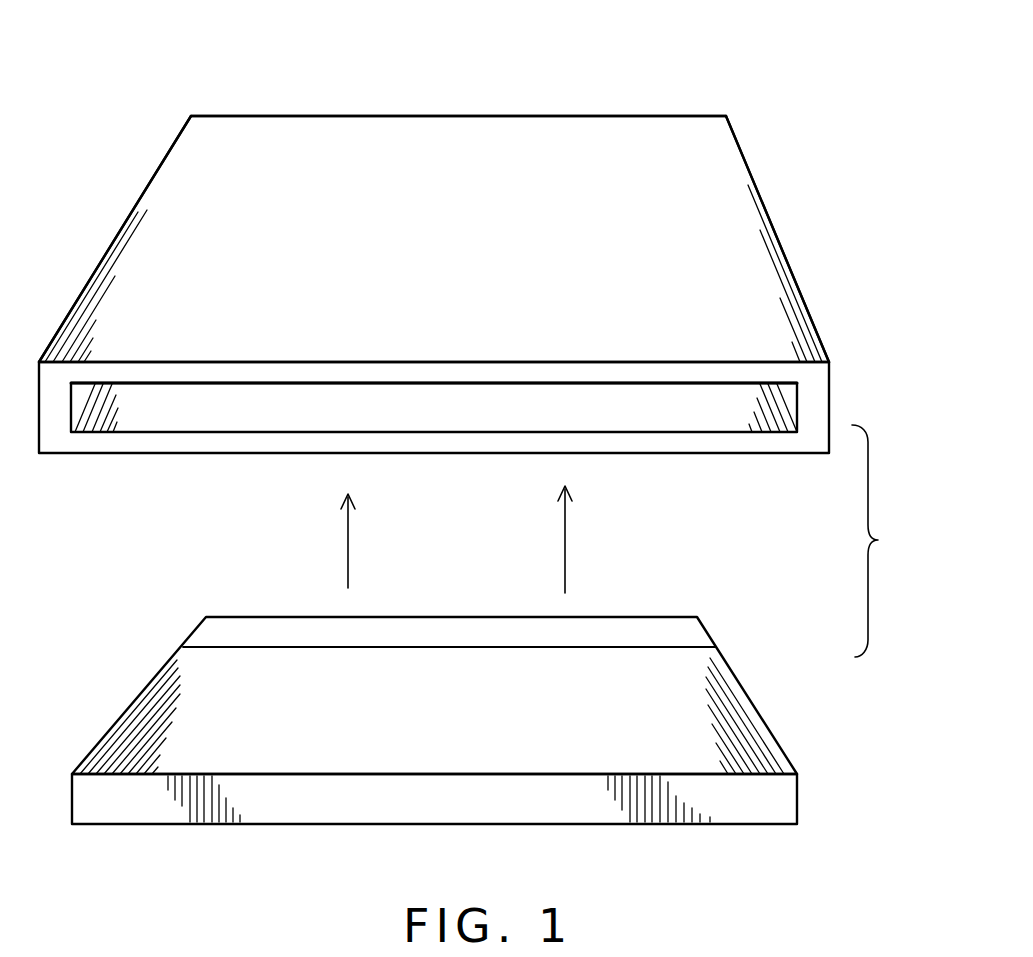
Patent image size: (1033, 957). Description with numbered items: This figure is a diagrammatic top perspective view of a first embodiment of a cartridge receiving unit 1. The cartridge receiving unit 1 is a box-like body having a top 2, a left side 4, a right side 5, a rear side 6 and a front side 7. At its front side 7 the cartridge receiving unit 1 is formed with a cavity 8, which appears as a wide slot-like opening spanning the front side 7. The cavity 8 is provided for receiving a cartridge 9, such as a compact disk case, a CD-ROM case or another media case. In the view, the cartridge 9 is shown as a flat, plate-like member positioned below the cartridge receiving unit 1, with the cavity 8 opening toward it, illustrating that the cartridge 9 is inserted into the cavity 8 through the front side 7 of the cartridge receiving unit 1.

The cartridge receiving unit 1 is at (465, 412).
The top 2 is at (731, 280).
The left side 4 is at (100, 262).
The right side 5 is at (822, 322).
The rear side 6 is at (464, 115).
The front side 7 is at (178, 445).
The cavity 8 is at (643, 400).
The cartridge 9 is at (663, 703).